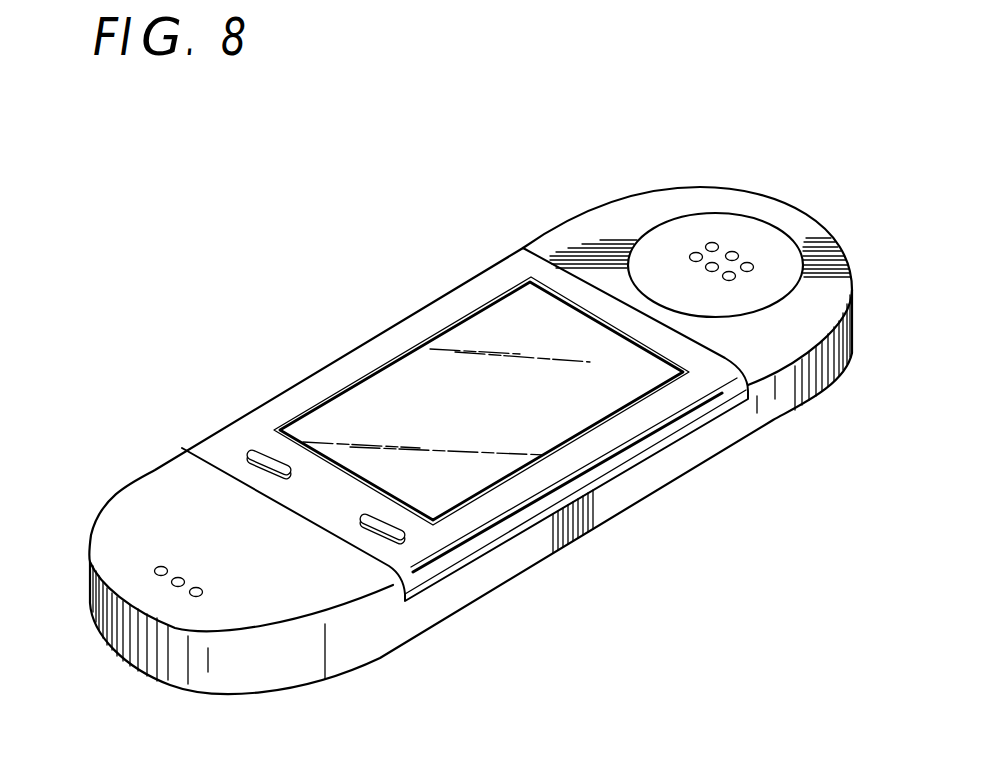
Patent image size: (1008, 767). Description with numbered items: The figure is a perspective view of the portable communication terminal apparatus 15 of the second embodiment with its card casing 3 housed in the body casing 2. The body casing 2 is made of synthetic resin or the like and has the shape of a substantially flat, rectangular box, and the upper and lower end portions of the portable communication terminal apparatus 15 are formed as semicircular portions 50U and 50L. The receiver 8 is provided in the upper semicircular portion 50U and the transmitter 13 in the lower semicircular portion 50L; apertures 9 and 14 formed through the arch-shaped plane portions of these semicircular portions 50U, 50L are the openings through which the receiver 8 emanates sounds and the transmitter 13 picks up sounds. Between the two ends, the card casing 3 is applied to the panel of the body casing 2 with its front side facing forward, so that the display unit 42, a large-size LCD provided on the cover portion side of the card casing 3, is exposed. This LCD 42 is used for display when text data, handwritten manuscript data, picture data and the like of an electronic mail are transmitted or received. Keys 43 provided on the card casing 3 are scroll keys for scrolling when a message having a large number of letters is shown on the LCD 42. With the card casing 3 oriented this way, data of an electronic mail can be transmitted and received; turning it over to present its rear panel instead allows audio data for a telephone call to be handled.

The portable communication terminal apparatus 15 is at (332, 271).
The body casing 2 is at (803, 391).
The card casing 3 is at (540, 476).
The display unit 42 is at (470, 338).
The keys 43 is at (262, 450).
The receiver 8 is at (686, 230).
The apertures 9 is at (737, 252).
The upper semicircular portion 50U is at (793, 223).
The lower semicircular portion 50L is at (157, 655).
The transmitter 13 is at (219, 604).
The apertures 14 is at (161, 566).